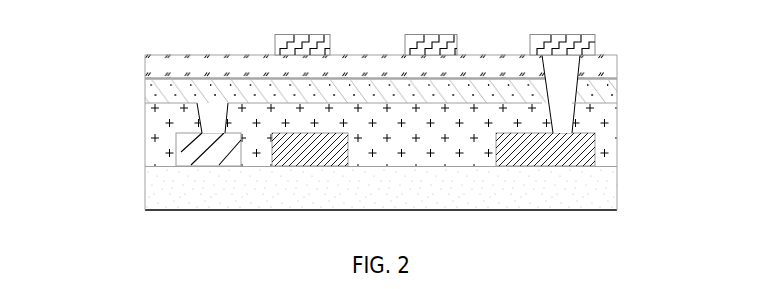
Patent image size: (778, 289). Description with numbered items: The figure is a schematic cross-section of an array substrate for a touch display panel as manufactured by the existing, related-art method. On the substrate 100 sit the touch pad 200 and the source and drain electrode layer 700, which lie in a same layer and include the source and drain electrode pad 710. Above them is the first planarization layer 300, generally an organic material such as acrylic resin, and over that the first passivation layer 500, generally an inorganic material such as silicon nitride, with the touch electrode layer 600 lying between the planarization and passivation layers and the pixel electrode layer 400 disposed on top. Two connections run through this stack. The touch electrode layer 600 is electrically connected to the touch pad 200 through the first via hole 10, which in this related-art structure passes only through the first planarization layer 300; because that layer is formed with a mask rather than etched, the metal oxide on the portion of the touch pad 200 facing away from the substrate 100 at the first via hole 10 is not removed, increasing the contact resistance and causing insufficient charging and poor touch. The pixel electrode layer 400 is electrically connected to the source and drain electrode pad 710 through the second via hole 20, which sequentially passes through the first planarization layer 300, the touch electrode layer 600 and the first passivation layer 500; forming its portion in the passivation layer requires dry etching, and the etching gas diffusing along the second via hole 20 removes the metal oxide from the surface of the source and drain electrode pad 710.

The first via hole 10 is at (207, 126).
The second via hole 20 is at (562, 97).
The substrate 100 is at (602, 203).
The touch pad 200 is at (185, 158).
The first planarization layer 300 is at (594, 118).
The pixel electrode layer 400 is at (579, 47).
The first passivation layer 500 is at (145, 58).
The touch electrode layer 600 is at (145, 84).
The source and drain electrode layer 700 is at (608, 160).
The source and drain electrode pad 710 is at (343, 134).